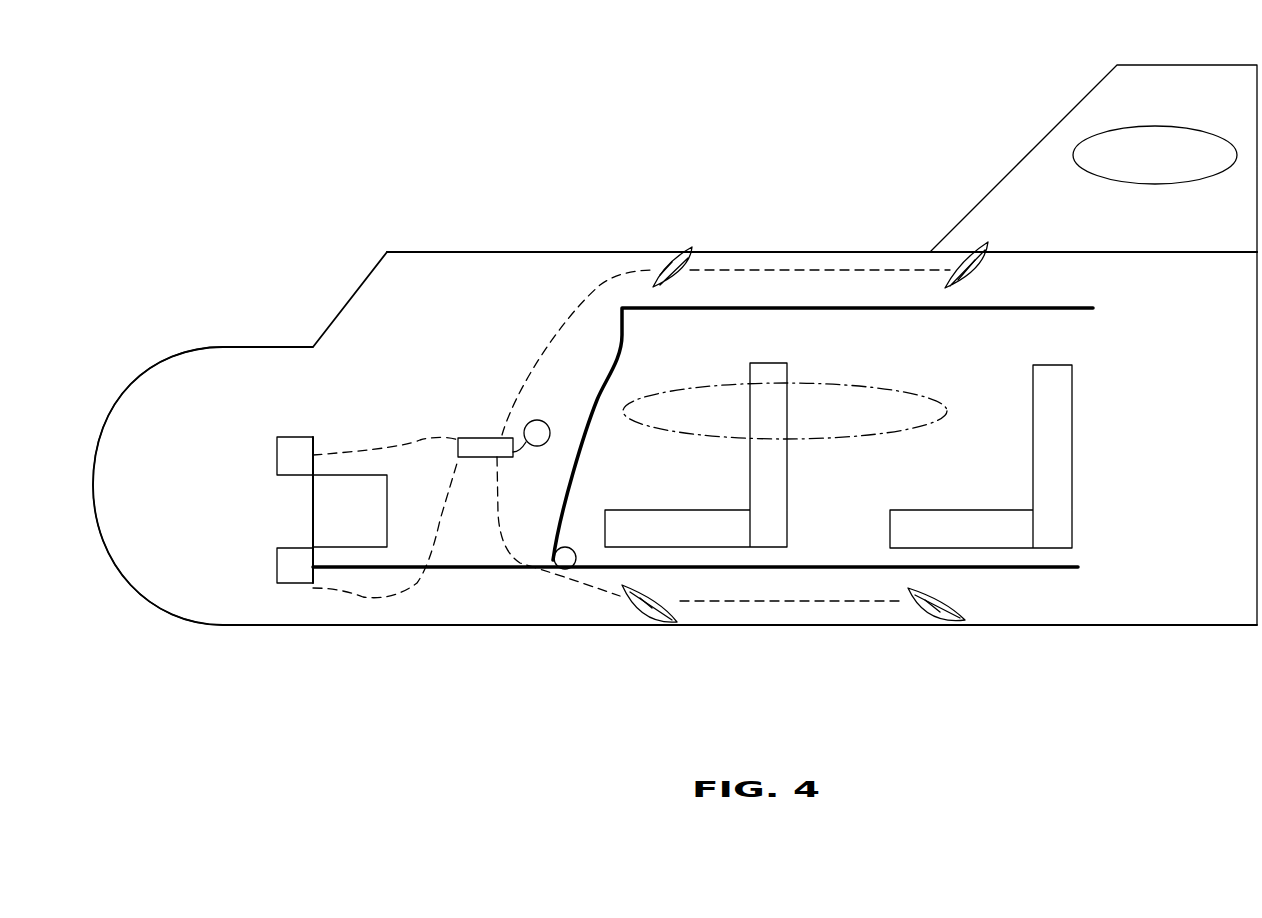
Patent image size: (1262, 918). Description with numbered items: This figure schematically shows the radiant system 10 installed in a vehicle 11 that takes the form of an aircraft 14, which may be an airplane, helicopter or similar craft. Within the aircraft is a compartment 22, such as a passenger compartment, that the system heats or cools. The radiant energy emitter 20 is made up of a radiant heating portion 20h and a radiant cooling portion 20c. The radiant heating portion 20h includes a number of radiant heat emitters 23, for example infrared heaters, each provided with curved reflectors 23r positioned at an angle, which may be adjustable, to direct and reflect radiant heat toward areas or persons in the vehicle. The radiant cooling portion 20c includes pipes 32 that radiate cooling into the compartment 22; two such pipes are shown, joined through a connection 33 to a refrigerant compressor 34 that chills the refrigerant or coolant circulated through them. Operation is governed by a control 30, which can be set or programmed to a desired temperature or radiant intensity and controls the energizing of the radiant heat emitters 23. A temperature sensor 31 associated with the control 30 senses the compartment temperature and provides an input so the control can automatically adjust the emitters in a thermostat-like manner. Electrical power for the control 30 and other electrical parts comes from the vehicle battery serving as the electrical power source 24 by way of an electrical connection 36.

The radiant system 10 is at (411, 270).
The vehicle 11 is at (503, 227).
The aircraft 14 is at (580, 252).
The radiant energy emitter 20 is at (773, 236).
The radiant heating portion 20h is at (1024, 285).
The radiant cooling portion 20c is at (1098, 323).
The compartment 22 is at (360, 310).
The radiant heat emitters 23 is at (672, 262).
The reflectors 23r is at (660, 265).
The electrical power source 24 is at (287, 437).
The control 30 is at (476, 437).
The temperature sensor 31 is at (547, 424).
The pipes 32 is at (840, 315).
The connection 33 is at (573, 567).
The refrigerant compressor 34 is at (277, 565).
The electrical connection 36 is at (375, 447).